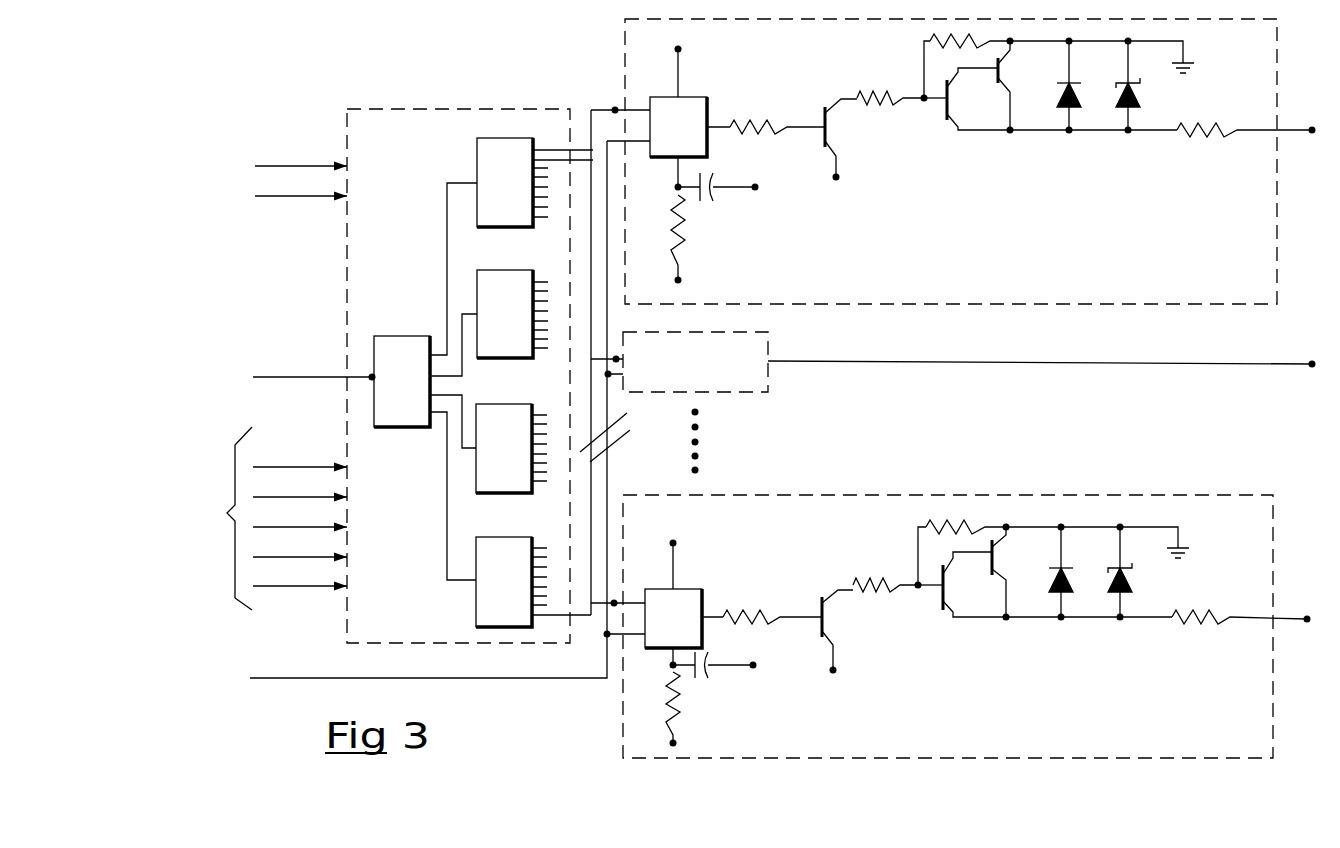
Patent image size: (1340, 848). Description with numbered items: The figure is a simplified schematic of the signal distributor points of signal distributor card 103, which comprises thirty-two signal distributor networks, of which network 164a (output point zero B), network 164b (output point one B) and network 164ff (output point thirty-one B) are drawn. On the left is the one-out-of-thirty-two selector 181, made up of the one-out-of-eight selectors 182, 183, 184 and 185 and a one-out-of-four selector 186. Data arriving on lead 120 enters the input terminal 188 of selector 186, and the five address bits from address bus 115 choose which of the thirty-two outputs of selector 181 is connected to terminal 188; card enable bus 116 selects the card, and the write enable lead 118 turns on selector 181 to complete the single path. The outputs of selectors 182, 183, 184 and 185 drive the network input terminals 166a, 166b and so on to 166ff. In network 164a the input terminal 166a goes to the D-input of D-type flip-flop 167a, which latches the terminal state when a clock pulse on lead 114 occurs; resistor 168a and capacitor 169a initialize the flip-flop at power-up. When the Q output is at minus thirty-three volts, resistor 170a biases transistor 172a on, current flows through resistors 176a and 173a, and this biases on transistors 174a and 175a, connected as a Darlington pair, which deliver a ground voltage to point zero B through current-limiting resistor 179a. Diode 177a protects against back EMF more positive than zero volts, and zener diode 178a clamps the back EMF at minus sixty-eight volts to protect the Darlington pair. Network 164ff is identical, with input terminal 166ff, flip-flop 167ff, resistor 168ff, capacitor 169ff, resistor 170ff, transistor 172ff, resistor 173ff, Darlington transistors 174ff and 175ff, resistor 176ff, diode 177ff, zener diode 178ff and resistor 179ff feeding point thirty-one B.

The signal distributor card 103 is at (491, 73).
The 1 out of 32 selector 181 is at (432, 108).
The 1 out of 8 selector 182 is at (506, 148).
The 1 out of 8 selector 183 is at (506, 280).
The 1 out of 8 selector 184 is at (506, 414).
The 1 out of 8 selector 185 is at (506, 547).
The 1 out of 4 selector 186 is at (402, 336).
The input terminal 188 is at (372, 374).
The write enable lead 118 is at (247, 146).
The card enable bus 116 is at (245, 195).
The lead 120 is at (258, 380).
The address bus 115 is at (244, 518).
The clock lead 114 is at (374, 424).
The signal distributor network 164a is at (624, 40).
The signal distributor network 164b is at (770, 340).
The signal distributor network 164ff is at (1040, 495).
The input terminal 166a is at (615, 110).
The input terminal 166b is at (618, 356).
The input terminal 166ff is at (612, 598).
The D-type flip-flop 167a is at (690, 97).
The D-type flip-flop 167ff is at (686, 589).
The resistor 168a is at (684, 235).
The resistor 168ff is at (682, 710).
The capacitor 169a is at (708, 173).
The capacitor 169ff is at (706, 656).
The resistor 170a is at (760, 124).
The resistor 170ff is at (764, 614).
The transistor 172a is at (829, 125).
The transistor 172ff is at (828, 620).
The resistor 173a is at (872, 94).
The resistor 173ff is at (870, 579).
The transistor 174a is at (946, 100).
The transistor 174ff is at (940, 590).
The transistor 175a is at (998, 70).
The transistor 175ff is at (990, 556).
The resistor 176a is at (950, 34).
The resistor 176ff is at (945, 511).
The diode 177a is at (1058, 90).
The diode 177ff is at (1050, 578).
The zener diode 178a is at (1142, 98).
The zener diode 178ff is at (1134, 583).
The resistor 179a is at (1208, 136).
The resistor 179ff is at (1202, 623).